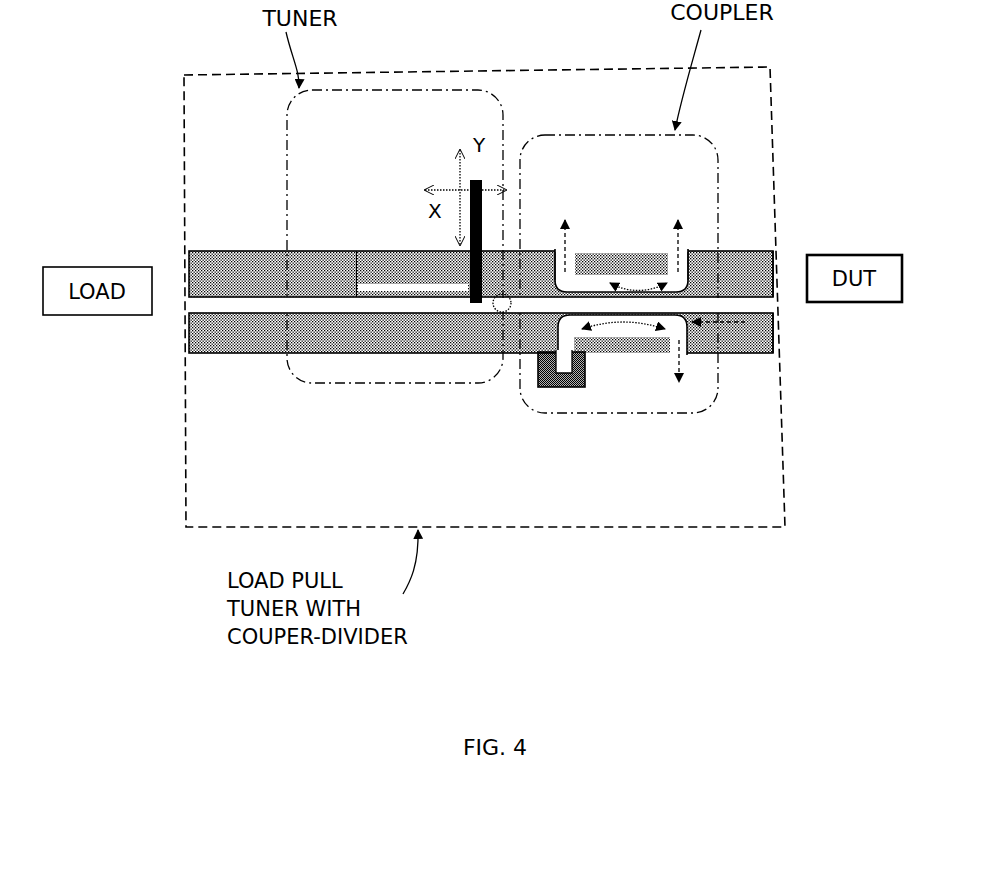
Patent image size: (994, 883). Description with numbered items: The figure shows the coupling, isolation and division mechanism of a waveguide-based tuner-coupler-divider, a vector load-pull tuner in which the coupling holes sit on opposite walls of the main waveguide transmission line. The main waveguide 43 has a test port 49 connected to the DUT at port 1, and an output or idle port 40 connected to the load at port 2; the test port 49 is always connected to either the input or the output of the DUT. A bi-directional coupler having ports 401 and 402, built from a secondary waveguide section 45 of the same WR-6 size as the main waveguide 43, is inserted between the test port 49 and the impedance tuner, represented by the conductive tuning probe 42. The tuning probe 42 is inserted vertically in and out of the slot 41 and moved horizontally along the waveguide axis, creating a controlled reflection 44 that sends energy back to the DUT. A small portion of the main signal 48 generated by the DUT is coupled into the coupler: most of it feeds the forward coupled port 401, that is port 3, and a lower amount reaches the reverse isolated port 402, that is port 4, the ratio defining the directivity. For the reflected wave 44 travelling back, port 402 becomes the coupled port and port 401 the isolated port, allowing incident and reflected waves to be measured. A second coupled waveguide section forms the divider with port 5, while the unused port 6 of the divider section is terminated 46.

The DUT port 1 is at (773, 307).
The load port 2 is at (182, 336).
The forward coupled port 3 is at (668, 243).
The reverse isolated port 4 is at (568, 247).
The divider port 5 is at (670, 357).
The unused divider port 6 is at (563, 388).
The output port 40 is at (188, 290).
The slot 41 is at (382, 258).
The conductive tuning probe 42 is at (483, 180).
The main waveguide 43 is at (262, 300).
The controlled reflection 44 is at (497, 312).
The secondary waveguide section 45 is at (570, 282).
The termination 46 is at (540, 388).
The main signal 48 is at (720, 322).
The test port 49 is at (773, 298).
The forward coupled port 401 is at (690, 252).
The reverse isolated port 402 is at (558, 252).